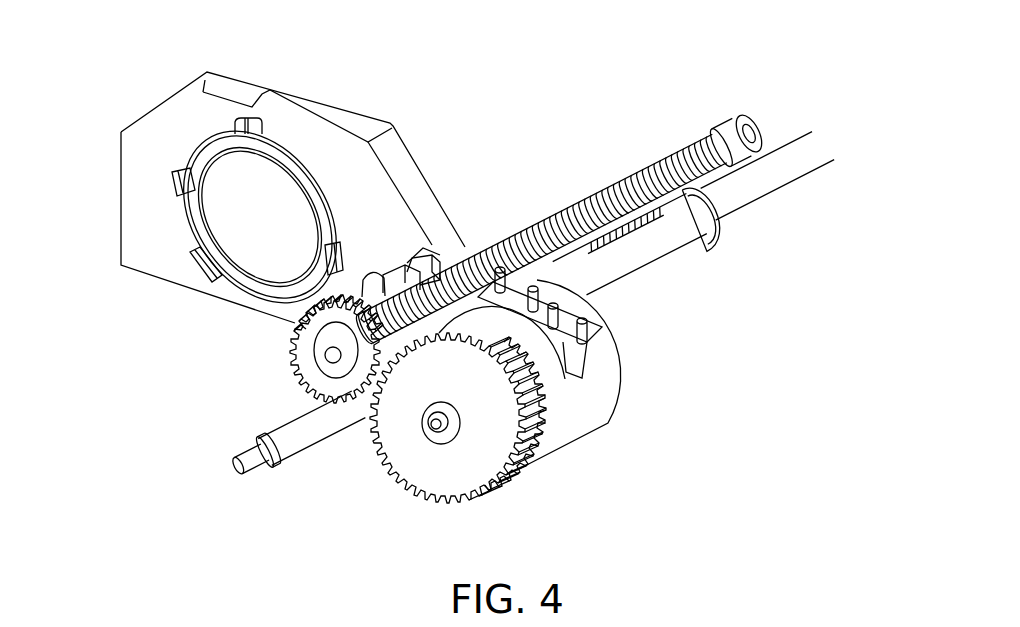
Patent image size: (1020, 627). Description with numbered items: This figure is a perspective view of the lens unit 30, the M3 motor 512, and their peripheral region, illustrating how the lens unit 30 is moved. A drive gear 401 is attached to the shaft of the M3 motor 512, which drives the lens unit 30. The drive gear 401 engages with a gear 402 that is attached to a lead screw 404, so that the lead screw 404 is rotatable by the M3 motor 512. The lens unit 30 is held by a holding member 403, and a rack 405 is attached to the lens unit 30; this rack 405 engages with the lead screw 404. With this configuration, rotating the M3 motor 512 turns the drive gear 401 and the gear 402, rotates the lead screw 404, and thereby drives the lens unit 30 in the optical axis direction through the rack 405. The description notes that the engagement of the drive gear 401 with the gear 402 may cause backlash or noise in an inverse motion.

The lens unit 30 is at (347, 165).
The drive gear 401 is at (467, 470).
The gear 402 is at (348, 380).
The holding member 403 is at (303, 438).
The lead screw 404 is at (637, 167).
The rack 405 is at (430, 275).
The M3 motor 512 is at (592, 405).